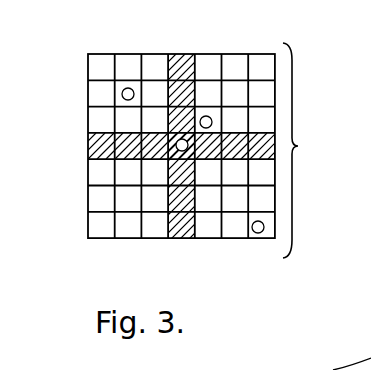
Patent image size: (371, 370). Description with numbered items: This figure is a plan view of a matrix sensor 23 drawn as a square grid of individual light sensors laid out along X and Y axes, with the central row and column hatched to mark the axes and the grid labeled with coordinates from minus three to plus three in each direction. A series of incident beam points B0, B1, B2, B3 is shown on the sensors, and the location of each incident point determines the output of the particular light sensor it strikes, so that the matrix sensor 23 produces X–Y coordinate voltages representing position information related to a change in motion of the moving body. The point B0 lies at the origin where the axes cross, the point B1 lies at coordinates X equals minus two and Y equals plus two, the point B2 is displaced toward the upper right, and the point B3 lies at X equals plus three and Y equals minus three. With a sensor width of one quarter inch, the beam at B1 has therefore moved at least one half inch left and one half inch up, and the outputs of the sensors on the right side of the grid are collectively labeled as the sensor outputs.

The matrix sensor 23 is at (262, 57).
The incident beam point B0 is at (183, 151).
The incident beam point B1 is at (127, 88).
The incident beam point B2 is at (210, 117).
The incident beam point B3 is at (252, 224).